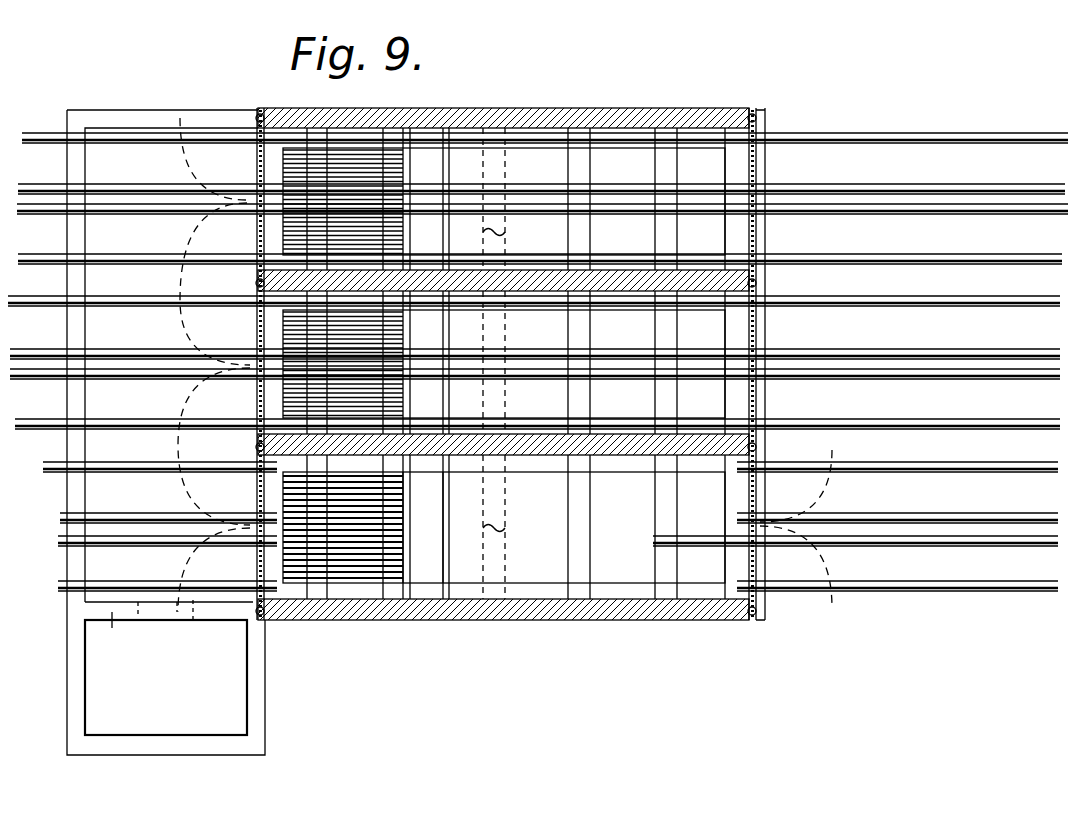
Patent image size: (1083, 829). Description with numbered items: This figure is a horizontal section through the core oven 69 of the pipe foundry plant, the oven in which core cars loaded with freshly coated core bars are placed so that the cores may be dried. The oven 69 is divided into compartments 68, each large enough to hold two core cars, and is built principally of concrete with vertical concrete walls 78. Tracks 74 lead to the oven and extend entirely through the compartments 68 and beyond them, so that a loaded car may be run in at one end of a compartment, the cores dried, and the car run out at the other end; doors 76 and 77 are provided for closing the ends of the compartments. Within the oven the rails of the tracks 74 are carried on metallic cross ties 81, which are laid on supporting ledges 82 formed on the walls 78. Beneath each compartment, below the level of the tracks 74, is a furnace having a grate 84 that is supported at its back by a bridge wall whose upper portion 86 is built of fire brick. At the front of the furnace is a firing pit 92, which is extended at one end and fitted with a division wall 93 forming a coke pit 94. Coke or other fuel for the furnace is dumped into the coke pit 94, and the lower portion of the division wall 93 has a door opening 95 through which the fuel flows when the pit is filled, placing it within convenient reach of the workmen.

The compartment 68 is at (504, 363).
The core oven 69 is at (568, 351).
The tracks 74 is at (43, 218).
The door 76 is at (258, 184).
The door 77 is at (757, 175).
The vertical concrete walls 78 is at (552, 122).
The metallic cross ties 81 is at (492, 166).
The supporting ledges 82 is at (526, 136).
The grate 84 is at (345, 165).
The upper portion of bridge wall 86 is at (423, 527).
The firing pit 92 is at (90, 400).
The division wall 93 is at (166, 432).
The coke pit 94 is at (166, 677).
The door opening 95 is at (138, 610).